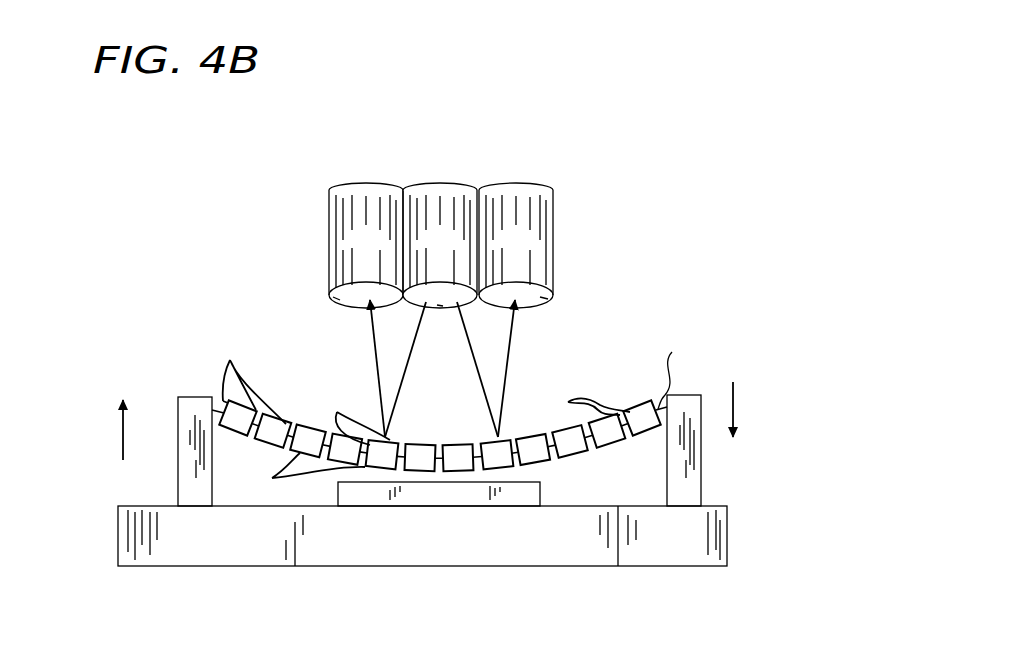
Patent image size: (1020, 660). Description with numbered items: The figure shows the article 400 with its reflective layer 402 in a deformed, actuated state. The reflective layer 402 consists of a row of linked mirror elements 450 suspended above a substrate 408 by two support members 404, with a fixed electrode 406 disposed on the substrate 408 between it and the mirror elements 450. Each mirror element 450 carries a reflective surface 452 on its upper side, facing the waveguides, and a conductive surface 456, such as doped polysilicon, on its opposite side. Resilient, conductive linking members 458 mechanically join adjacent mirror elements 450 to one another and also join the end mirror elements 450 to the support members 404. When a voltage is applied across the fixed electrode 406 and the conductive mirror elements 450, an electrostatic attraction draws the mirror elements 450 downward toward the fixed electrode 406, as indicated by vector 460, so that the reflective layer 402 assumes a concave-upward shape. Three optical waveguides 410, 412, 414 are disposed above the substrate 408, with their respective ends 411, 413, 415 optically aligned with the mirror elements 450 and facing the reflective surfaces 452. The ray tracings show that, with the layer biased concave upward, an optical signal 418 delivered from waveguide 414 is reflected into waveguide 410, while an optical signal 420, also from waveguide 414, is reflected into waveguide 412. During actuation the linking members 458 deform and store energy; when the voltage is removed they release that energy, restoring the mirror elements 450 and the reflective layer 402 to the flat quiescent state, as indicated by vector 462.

The article 400 is at (212, 150).
The reflective layer 402 is at (204, 367).
The support members 404 is at (178, 485).
The fixed electrode 406 is at (540, 490).
The substrate 408 is at (727, 536).
The optical waveguide 410 is at (366, 184).
The end of waveguide 410 411 is at (333, 297).
The optical waveguide 412 is at (518, 184).
The end of waveguide 412 413 is at (548, 297).
The optical waveguide 414 is at (445, 183).
The end of waveguide 414 415 is at (440, 306).
The optical signal 418 is at (412, 342).
The optical signal 420 is at (477, 347).
The mirror elements 450 is at (590, 387).
The reflective surface 452 is at (351, 416).
The conductive surface 456 is at (299, 470).
The linking members 458 is at (452, 374).
The vector 460 is at (733, 400).
The vector 462 is at (123, 430).